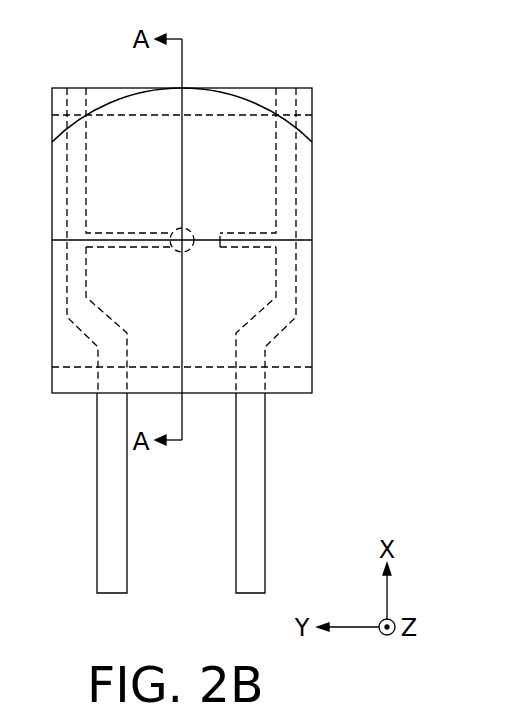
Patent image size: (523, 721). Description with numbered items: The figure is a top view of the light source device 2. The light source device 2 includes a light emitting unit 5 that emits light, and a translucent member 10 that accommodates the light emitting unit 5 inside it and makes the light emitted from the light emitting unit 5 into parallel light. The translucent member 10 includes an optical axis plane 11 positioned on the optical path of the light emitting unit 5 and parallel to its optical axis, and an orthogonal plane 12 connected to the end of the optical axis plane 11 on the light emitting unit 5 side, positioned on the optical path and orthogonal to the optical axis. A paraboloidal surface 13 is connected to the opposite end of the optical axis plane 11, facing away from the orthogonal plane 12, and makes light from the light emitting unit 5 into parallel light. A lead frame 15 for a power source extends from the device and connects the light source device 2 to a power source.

The light source device 2 is at (242, 65).
The light emitting unit 5 is at (192, 230).
The translucent member 10 is at (312, 163).
The optical axis plane 11 is at (283, 240).
The orthogonal plane 12 is at (292, 345).
The paraboloidal surface 13 is at (253, 190).
The lead frame 15 is at (127, 515).